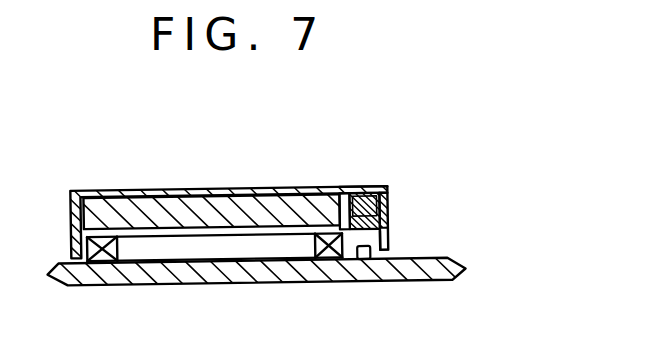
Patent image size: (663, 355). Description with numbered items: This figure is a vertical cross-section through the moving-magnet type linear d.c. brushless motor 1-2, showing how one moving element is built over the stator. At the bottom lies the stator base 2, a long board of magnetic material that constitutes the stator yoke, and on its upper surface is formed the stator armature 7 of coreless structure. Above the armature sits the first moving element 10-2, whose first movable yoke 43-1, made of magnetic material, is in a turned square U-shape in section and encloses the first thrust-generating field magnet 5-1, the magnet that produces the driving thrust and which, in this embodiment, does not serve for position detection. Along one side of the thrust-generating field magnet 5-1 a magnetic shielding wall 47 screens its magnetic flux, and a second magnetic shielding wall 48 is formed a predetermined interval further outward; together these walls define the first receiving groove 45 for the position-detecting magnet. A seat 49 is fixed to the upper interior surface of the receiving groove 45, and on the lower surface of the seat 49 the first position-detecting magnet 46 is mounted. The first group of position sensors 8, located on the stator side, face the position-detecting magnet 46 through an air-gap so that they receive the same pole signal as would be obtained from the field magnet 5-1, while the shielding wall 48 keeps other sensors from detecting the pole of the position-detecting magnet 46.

The moving-magnet type linear d.c. brushless motor 1-2 is at (400, 160).
The stator base 2 is at (270, 277).
The first thrust-generating field magnet 5-1 is at (240, 202).
The stator armature 7 is at (155, 245).
The first group of position sensors 8 is at (362, 258).
The first moving element 10-2 is at (393, 191).
The first movable yoke 43-1 is at (172, 192).
The first receiving groove 45 is at (360, 192).
The first position-detecting magnet 46 is at (381, 235).
The magnetic shielding wall 47 is at (327, 194).
The magnetic shielding wall 48 is at (389, 227).
The seat 49 is at (389, 207).